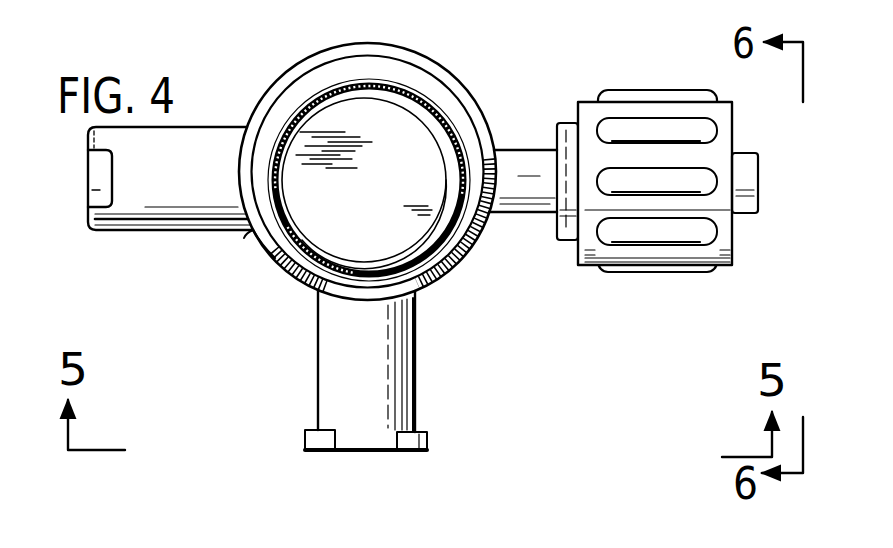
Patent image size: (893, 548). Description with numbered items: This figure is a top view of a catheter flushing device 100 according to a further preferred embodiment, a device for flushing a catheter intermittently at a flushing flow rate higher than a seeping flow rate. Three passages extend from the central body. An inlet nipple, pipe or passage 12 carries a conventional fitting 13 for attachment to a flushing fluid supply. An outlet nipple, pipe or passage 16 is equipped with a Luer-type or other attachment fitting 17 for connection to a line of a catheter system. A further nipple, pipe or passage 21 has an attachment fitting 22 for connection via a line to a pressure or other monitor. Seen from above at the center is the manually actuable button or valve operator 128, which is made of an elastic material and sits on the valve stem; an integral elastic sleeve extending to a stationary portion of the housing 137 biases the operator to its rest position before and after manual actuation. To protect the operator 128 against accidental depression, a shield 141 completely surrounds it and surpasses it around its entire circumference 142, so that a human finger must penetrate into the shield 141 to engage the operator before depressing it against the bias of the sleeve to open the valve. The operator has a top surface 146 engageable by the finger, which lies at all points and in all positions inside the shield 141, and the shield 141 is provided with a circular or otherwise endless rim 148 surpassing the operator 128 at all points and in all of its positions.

The catheter flushing device 100 is at (304, 50).
The housing 137 is at (440, 300).
The rim 148 is at (292, 272).
The shield 141 is at (266, 262).
The circumference 142 is at (397, 83).
The top surface 146 is at (385, 228).
The valve operator 128 is at (420, 140).
The passage 21 is at (190, 125).
The attachment fitting 22 is at (90, 188).
The inlet passage 12 is at (323, 372).
The fitting 13 is at (312, 440).
The attachment fitting 17 is at (640, 93).
The outlet passage 16 is at (750, 152).